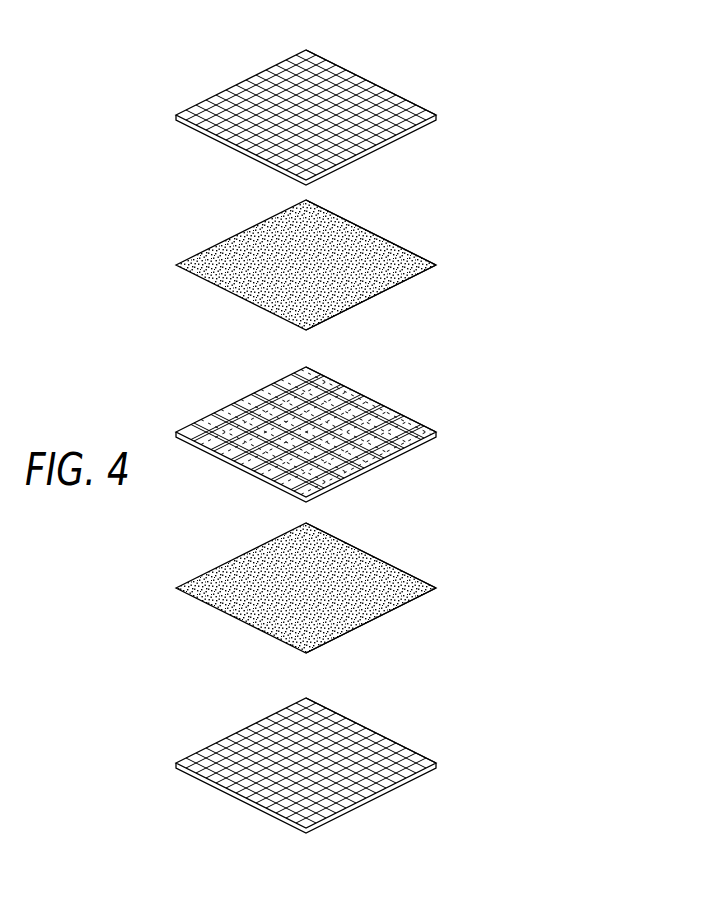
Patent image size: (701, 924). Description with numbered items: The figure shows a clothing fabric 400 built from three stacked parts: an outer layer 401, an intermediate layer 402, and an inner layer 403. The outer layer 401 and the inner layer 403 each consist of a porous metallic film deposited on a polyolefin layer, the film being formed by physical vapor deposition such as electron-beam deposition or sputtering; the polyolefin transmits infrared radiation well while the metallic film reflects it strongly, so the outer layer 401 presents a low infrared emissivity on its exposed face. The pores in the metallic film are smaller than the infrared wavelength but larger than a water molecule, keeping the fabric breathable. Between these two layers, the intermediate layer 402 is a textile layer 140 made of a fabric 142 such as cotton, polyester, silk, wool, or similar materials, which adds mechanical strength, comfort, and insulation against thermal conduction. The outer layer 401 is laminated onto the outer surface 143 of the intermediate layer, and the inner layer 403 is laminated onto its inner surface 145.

The textile layer 140 is at (277, 400).
The fabric 142 is at (357, 415).
The outer surface of the intermediate layer 143 is at (397, 437).
The inner surface of the intermediate layer 145 is at (397, 457).
The clothing fabric 400 is at (517, 12).
The outer layer 401 is at (173, 73).
The intermediate layer 402 is at (233, 402).
The inner layer 403 is at (173, 558).